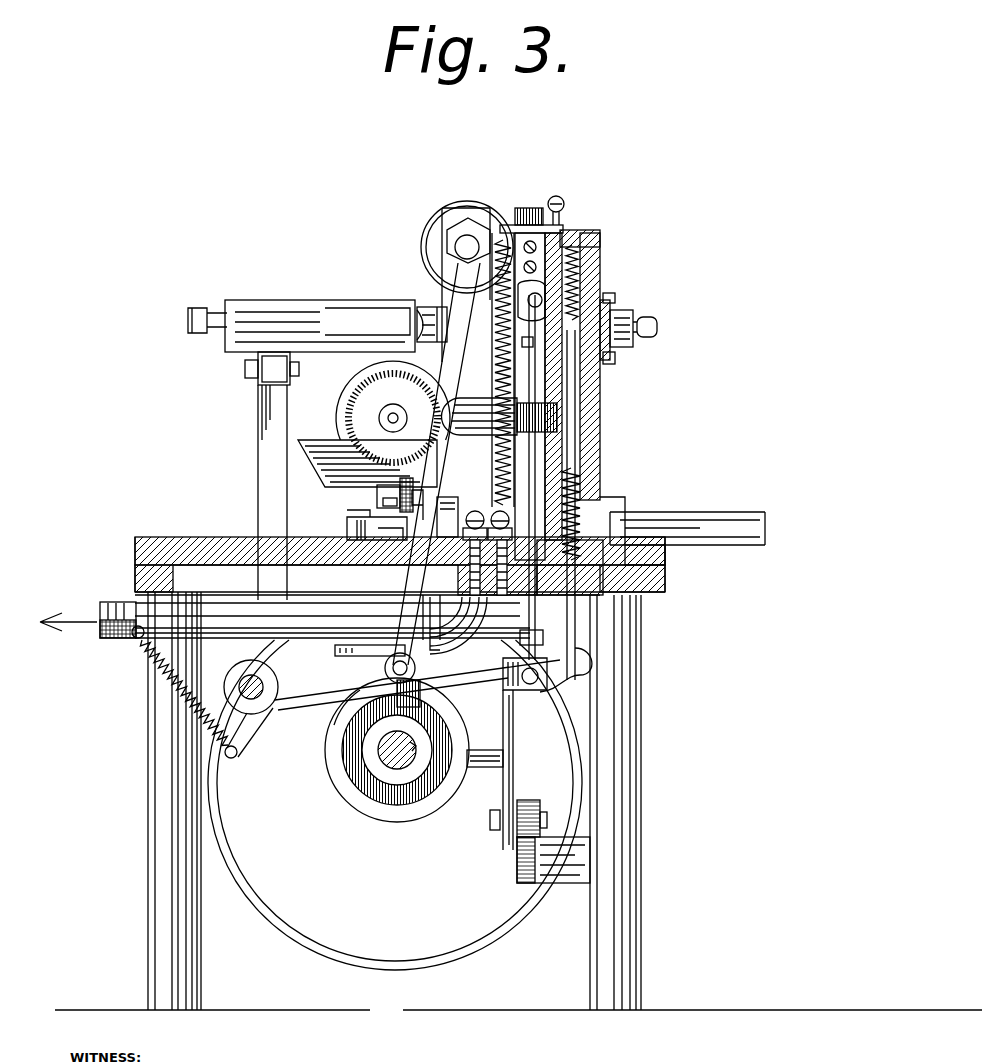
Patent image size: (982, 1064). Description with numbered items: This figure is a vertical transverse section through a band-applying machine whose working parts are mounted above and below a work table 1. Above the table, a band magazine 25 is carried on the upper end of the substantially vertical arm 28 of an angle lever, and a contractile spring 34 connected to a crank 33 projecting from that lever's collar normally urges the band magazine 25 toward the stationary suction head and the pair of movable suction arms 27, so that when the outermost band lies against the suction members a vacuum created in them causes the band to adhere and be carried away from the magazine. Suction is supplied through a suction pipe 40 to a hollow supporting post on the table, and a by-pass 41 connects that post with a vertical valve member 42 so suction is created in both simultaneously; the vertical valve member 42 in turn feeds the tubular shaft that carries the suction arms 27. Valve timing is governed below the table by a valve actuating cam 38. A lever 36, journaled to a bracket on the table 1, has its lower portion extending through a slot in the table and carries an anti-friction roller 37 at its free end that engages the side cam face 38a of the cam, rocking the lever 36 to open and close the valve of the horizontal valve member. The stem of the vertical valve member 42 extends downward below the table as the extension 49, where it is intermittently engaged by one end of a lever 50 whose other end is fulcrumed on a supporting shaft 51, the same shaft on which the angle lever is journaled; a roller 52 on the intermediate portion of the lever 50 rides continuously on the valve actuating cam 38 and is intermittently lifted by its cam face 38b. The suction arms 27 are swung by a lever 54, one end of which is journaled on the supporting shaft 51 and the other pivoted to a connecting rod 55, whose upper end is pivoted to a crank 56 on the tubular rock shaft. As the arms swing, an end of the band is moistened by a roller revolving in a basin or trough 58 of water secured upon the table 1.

The work table 1 is at (645, 567).
The band magazine 25 is at (212, 305).
The movable suction arms 27 is at (432, 318).
The vertical arm 28 is at (270, 428).
The crank 33 is at (243, 732).
The contractile spring 34 is at (175, 690).
The lever 36 is at (438, 350).
The anti-friction roller 37 is at (515, 692).
The valve actuating cam 38 is at (400, 792).
The side cam face 38a is at (351, 801).
The cam face 38b is at (327, 793).
The suction pipe 40 is at (120, 605).
The by-pass 41 is at (522, 400).
The vertical valve member 42 is at (590, 465).
The valve stem extension 49 is at (575, 633).
The lever 50 is at (583, 688).
The supporting shaft 51 is at (252, 680).
The roller 52 is at (335, 663).
The lever 54 is at (590, 700).
The connecting rod 55 is at (530, 482).
The crank 56 is at (535, 292).
The basin or trough 58 is at (328, 450).